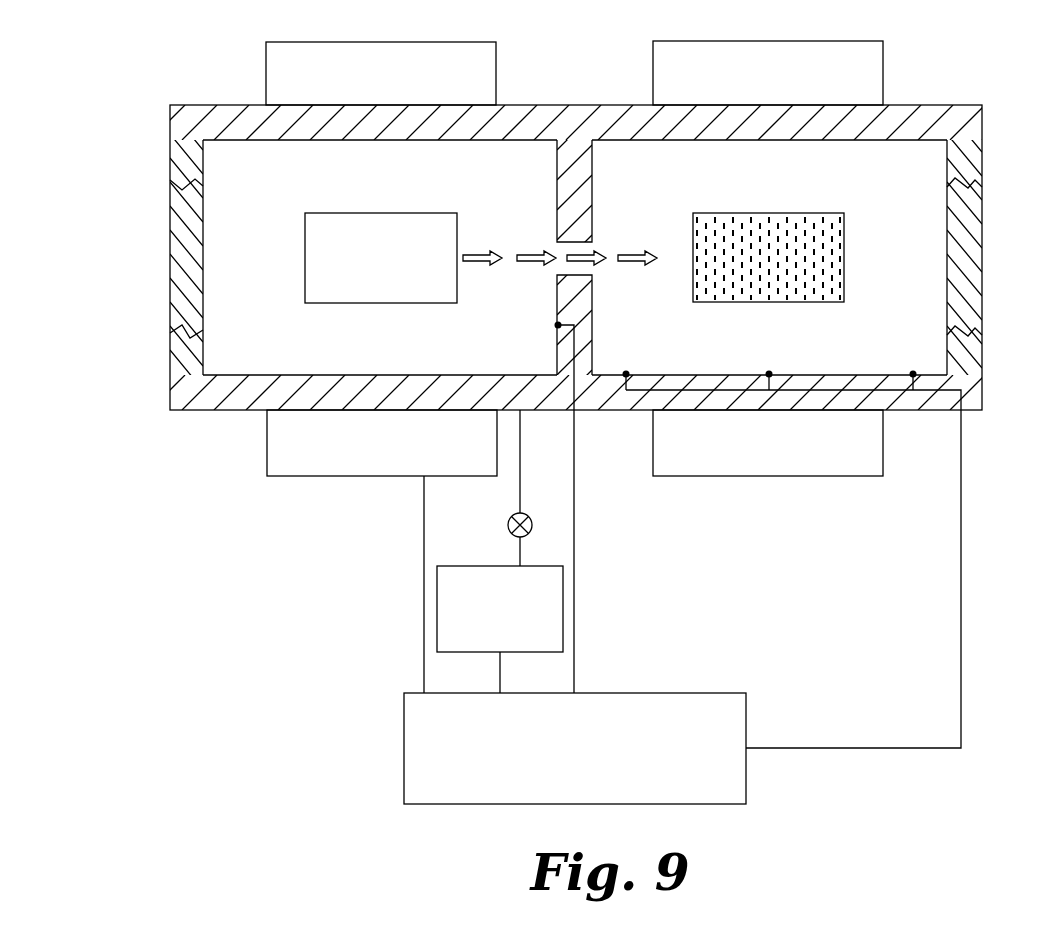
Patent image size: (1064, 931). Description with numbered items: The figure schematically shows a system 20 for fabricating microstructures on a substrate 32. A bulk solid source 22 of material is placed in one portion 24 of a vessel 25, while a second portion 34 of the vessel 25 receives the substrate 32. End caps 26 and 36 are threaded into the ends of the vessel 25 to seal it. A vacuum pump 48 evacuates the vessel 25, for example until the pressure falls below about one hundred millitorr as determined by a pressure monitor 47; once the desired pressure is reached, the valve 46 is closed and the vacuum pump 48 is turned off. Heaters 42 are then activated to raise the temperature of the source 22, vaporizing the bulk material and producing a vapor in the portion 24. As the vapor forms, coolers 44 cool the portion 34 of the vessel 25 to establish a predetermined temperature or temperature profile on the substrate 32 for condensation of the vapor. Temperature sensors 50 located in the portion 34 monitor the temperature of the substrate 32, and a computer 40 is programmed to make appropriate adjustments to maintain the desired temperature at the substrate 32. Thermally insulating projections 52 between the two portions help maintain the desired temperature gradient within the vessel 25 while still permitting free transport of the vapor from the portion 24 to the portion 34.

The system 20 is at (124, 56).
The bulk solid source 22 is at (457, 222).
The first portion of the vessel 24 is at (272, 160).
The vessel 25 is at (550, 105).
The end cap 26 is at (170, 258).
The substrate 32 is at (844, 248).
The second portion of the vessel 34 is at (915, 165).
The end cap 36 is at (982, 258).
The computer 40 is at (727, 804).
The heaters 42 is at (266, 47).
The coolers 44 is at (883, 52).
The valve 46 is at (530, 514).
The pressure monitor 47 is at (558, 325).
The vacuum pump 48 is at (447, 566).
The temperature sensors 50 is at (626, 374).
The thermally insulating projections 52 is at (577, 200).